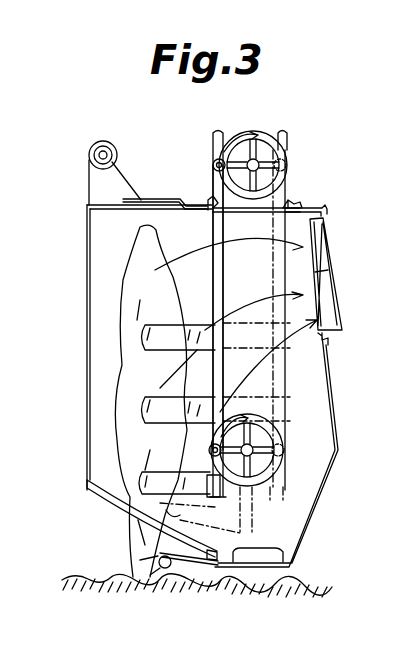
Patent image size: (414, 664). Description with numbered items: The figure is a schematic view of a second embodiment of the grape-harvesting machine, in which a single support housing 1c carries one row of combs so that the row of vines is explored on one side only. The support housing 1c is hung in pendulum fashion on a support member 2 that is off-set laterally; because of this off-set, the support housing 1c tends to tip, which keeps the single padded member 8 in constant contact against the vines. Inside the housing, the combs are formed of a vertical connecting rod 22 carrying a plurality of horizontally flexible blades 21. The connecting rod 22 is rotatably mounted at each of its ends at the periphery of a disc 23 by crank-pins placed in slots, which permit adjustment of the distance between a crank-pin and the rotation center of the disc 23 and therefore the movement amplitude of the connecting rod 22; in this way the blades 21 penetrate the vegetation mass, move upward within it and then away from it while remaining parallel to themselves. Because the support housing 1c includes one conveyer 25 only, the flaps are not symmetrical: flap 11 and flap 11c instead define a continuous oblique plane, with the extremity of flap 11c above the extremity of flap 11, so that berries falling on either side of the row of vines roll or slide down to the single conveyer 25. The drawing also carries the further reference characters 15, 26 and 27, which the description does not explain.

The support housing 1c is at (337, 388).
The support member 2 is at (90, 155).
The padded member 8 is at (166, 570).
The flap 11 is at (130, 565).
The flap 11c is at (95, 500).
The hinged panel 15 is at (322, 246).
The horizontally flexible blades 21 is at (150, 402).
The vertical connecting rod 22 is at (215, 293).
The disc 23 is at (280, 150).
The conveyer 25 is at (276, 553).
The bracket 26 is at (280, 198).
The chain frame 27 is at (210, 200).